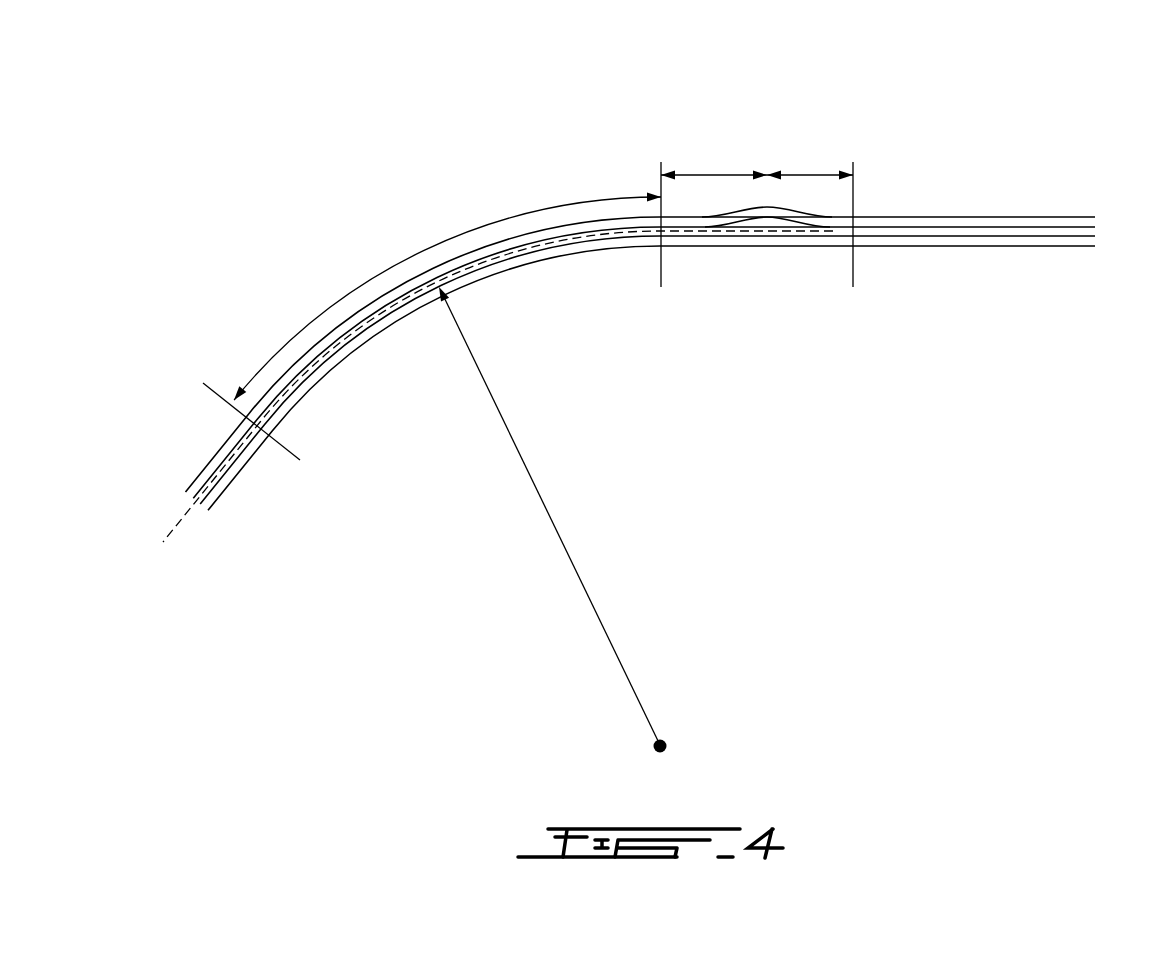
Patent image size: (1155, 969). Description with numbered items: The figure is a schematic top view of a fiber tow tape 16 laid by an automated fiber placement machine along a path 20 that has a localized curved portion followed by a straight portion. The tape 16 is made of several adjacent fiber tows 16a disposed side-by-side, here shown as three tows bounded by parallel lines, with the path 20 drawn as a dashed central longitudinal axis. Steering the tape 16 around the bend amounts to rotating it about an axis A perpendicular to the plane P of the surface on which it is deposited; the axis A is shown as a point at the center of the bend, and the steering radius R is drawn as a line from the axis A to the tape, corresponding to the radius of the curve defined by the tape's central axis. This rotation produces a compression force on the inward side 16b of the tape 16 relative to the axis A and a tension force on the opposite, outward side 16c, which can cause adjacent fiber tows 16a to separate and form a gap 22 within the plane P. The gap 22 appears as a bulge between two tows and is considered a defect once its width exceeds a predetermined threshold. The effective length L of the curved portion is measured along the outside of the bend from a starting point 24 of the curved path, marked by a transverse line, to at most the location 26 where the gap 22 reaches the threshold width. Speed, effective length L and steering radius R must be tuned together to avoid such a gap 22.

The tape 16 is at (664, 275).
The fiber tows 16a is at (1075, 218).
The inward side 16b is at (380, 350).
The outward side 16c is at (517, 212).
The path 20 is at (422, 289).
The gap 22 is at (767, 213).
The starting point 24 is at (203, 382).
The location 26 is at (767, 229).
The effective length L is at (352, 292).
The plane P is at (700, 369).
The steering radius R is at (545, 502).
The axis A is at (680, 738).